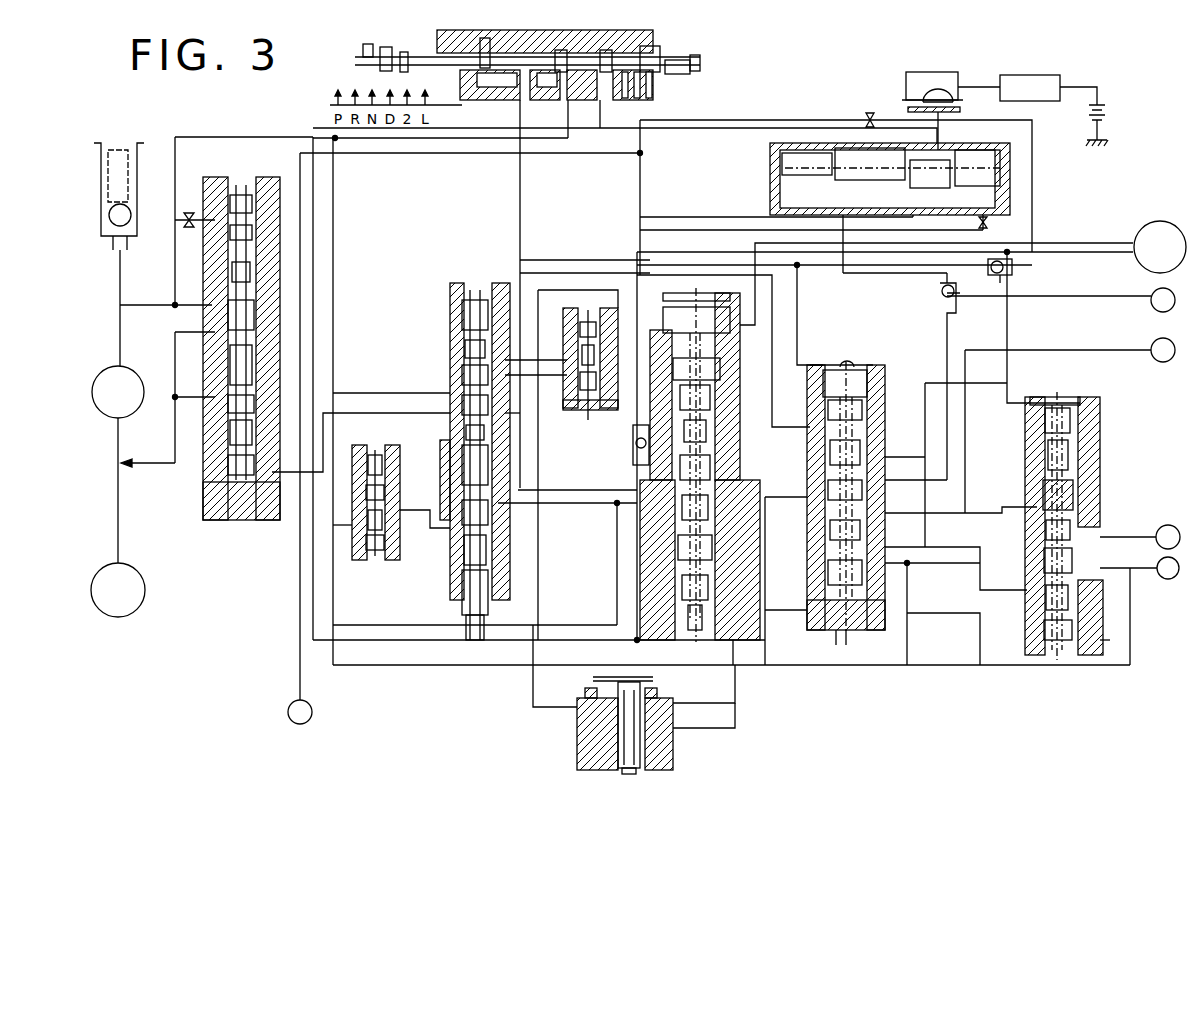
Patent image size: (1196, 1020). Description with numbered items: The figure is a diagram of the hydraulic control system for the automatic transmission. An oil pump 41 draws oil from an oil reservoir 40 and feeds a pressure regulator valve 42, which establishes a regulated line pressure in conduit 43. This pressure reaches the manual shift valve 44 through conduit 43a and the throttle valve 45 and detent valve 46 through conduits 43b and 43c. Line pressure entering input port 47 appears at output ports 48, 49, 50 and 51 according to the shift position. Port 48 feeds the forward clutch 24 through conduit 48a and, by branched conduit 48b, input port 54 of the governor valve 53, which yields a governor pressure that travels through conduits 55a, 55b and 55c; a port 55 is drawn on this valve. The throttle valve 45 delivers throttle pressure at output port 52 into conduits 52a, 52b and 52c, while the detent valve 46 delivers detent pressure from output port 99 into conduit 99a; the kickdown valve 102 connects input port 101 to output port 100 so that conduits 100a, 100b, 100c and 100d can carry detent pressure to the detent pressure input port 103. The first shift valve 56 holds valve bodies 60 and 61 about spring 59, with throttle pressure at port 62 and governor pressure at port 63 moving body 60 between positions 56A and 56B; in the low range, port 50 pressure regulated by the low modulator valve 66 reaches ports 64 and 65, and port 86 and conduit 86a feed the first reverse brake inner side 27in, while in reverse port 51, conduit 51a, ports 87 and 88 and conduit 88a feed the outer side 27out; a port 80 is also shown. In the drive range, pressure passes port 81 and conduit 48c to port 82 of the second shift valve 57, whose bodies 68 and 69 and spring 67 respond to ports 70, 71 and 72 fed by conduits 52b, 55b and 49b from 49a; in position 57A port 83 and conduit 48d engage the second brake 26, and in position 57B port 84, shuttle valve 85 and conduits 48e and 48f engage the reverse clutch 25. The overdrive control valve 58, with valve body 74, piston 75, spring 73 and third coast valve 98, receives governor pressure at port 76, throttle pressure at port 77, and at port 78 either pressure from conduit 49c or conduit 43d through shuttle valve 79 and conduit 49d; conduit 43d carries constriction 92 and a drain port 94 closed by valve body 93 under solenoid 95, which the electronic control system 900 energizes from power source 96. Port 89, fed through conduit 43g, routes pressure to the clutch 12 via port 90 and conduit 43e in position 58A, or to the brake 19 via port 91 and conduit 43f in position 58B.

The clutch of the overdrive mechanism 12 is at (1168, 537).
The brake of the overdrive mechanism 19 is at (1168, 568).
The forward clutch 24 is at (300, 438).
The reverse clutch 25 is at (1163, 300).
The second brake 26 is at (1070, 350).
The inner side of first reverse brake 27in is at (1160, 247).
The outer side of first reverse brake 27out is at (1160, 255).
The oil reservoir 40 is at (136, 571).
The oil pump 41 is at (136, 375).
The pressure regulator valve 42 is at (256, 180).
The conduit 43 is at (248, 137).
The conduit 43a is at (384, 140).
The conduit 43b is at (335, 241).
The conduit 43c is at (335, 431).
The conduit 43d is at (745, 127).
The conduit 43e is at (1150, 536).
The conduit 43f is at (1132, 586).
The conduit 43g is at (943, 667).
The manual shift valve 44 is at (705, 62).
The throttle valve 45 is at (462, 280).
The detent valve 46 is at (388, 452).
The input port 47 is at (586, 101).
The output port 48 is at (567, 103).
The conduit 48a is at (315, 288).
The branched conduit 48b is at (420, 641).
The conduit 48c is at (767, 500).
The conduit 48d is at (965, 514).
The conduit 48e is at (922, 442).
The conduit 48f is at (1076, 298).
The output port 49 is at (518, 102).
The conduit 49a is at (522, 177).
The conduit 49b is at (799, 300).
The conduit 49c is at (882, 274).
The conduit 49d is at (1010, 320).
The output port 50 is at (600, 101).
The output port 51 is at (640, 93).
The conduit 51a is at (435, 154).
The output port 52 is at (506, 414).
The conduit 52a is at (540, 490).
The conduit 52b is at (774, 380).
The conduit 52c is at (966, 455).
The governor valve 53 is at (573, 759).
The input port 54 is at (673, 729).
The port 55 is at (673, 704).
The conduit 55a is at (763, 620).
The conduit 55b is at (768, 608).
The conduit 55c is at (925, 613).
The 1-2 shift valve 56 is at (706, 302).
The lower position 56A is at (680, 642).
The upper position 56B is at (704, 642).
The 2-3 shift valve 57 is at (849, 358).
The lower position 57A is at (832, 625).
The upper position 57B is at (855, 625).
The overdrive control valve 58 is at (1072, 401).
The lower position 58A is at (1072, 661).
The upper position 58B is at (1052, 661).
The compression spring 59 is at (712, 434).
The valve body 60 is at (712, 480).
The valve body 61 is at (722, 349).
The port 62 is at (668, 482).
The port 63 is at (736, 640).
The port 64 is at (676, 302).
The port 65 is at (662, 361).
The low modulator valve 66 is at (766, 168).
The compression spring 67 is at (862, 410).
The valve body 68 is at (866, 502).
The valve body 69 is at (870, 390).
The port 70 is at (810, 428).
The port 71 is at (795, 615).
The port 72 is at (810, 366).
The compression coil spring 73 is at (1085, 491).
The valve body 74 is at (1085, 511).
The piston 75 is at (1085, 426).
The port 76 is at (1106, 638).
The port 77 is at (1025, 451).
The port 78 is at (1025, 401).
The shuttle valve 79 is at (1012, 272).
The port 80 is at (656, 561).
The port 81 is at (735, 577).
The port 82 is at (806, 498).
The port 83 is at (866, 528).
The port 84 is at (864, 485).
The shuttle valve 85 is at (954, 302).
The port 86 is at (733, 331).
The conduit 86a is at (753, 240).
The port 87 is at (655, 396).
The port 88 is at (660, 383).
The conduit 88a is at (694, 252).
The port 89 is at (1125, 568).
The port 90 is at (1105, 537).
The port 91 is at (1085, 567).
The constriction 92 is at (867, 116).
The valve body 93 is at (938, 92).
The drain port 94 is at (940, 112).
The solenoid 95 is at (906, 79).
The power source 96 is at (1107, 117).
The third coast valve 98 is at (1085, 476).
The output port 99 is at (400, 526).
The conduit 99a is at (412, 511).
The output port 100 is at (498, 504).
The conduit 100a is at (540, 504).
The conduit 100b is at (909, 645).
The conduit 100c is at (918, 547).
The conduit 100d is at (916, 565).
The input port 101 is at (452, 541).
The kickdown valve 102 is at (455, 569).
The detent pressure input port 103 is at (1027, 507).
The electronic control system 900 is at (1040, 75).